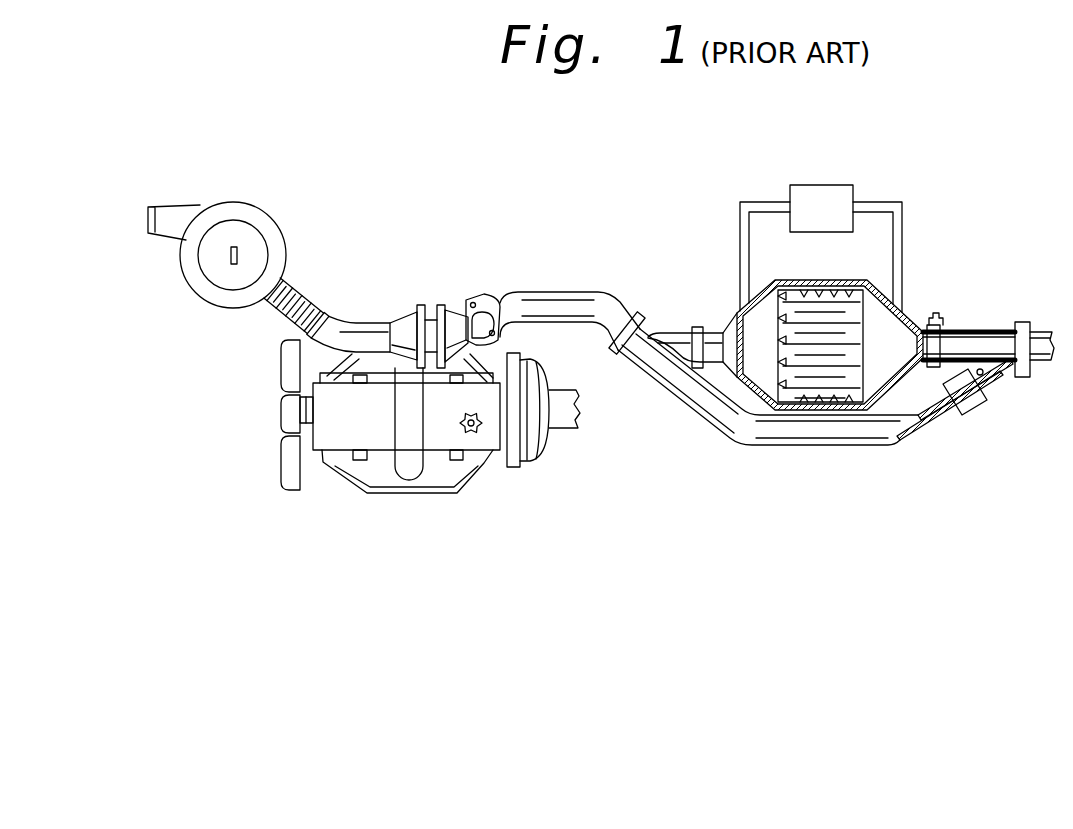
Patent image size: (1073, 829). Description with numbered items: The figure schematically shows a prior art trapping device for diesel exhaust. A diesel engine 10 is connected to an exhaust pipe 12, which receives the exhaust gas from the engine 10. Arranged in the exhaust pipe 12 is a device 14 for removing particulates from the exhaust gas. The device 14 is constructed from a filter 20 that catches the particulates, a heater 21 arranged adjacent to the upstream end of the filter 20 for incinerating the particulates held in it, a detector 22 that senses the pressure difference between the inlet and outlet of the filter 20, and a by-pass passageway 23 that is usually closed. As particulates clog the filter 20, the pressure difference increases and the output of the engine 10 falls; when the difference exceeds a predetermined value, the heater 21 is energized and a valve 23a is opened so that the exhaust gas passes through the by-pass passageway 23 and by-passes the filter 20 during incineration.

The diesel engine 10 is at (387, 476).
The exhaust pipe 12 is at (581, 300).
The device for removing particulates 14 is at (928, 233).
The filter 20 is at (897, 312).
The heater 21 is at (740, 320).
The detector 22 is at (828, 185).
The by-pass passageway 23 is at (750, 447).
The valve 23a is at (982, 378).